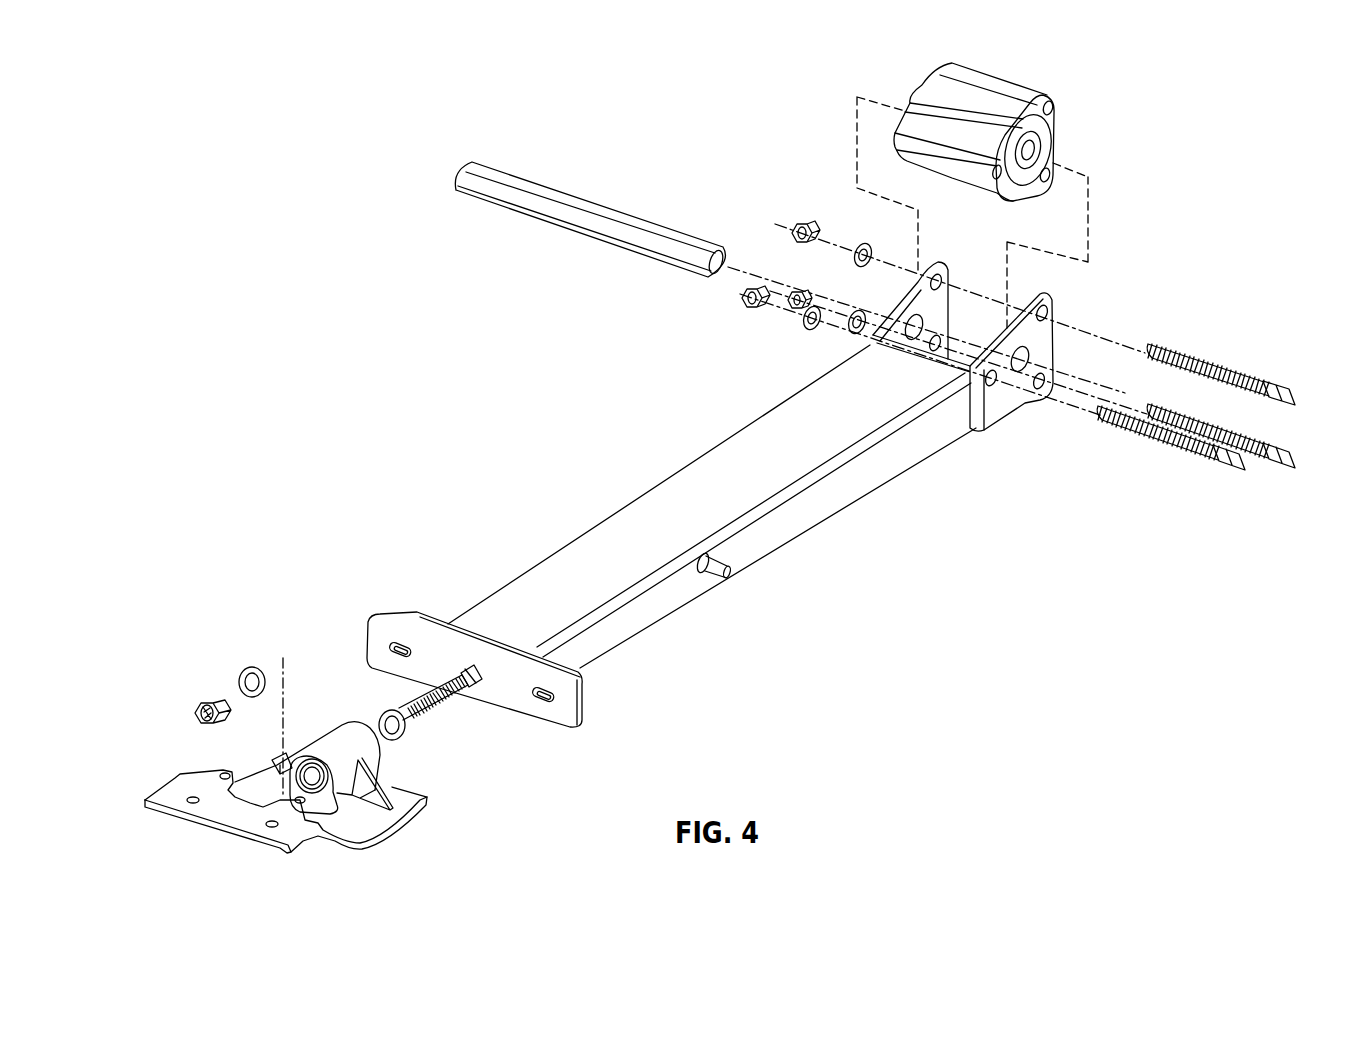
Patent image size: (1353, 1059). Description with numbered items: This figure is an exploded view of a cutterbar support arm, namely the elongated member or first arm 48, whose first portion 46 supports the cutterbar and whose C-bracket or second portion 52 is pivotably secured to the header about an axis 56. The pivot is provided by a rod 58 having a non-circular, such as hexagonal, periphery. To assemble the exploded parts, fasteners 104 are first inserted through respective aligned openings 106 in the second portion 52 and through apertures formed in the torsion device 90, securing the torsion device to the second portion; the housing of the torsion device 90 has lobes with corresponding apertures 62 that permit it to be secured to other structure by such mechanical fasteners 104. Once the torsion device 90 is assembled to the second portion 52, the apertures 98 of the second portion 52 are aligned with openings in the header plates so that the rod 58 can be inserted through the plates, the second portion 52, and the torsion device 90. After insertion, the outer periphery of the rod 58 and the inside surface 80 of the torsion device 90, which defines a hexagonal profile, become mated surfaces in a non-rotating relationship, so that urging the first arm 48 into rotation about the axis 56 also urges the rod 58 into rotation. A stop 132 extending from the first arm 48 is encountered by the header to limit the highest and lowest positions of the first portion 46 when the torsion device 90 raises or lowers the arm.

The first portion 46 is at (398, 826).
The first arm 48 is at (828, 512).
The second portion 52 is at (995, 407).
The axis 56 is at (1082, 380).
The rod 58 is at (633, 215).
The apertures 62 is at (1050, 107).
The inside surface 80 is at (1030, 150).
The torsion device 90 is at (1000, 77).
The apertures 98 is at (933, 323).
The fasteners 104 is at (1222, 367).
The openings 106 is at (1058, 312).
The stop 132 is at (730, 575).